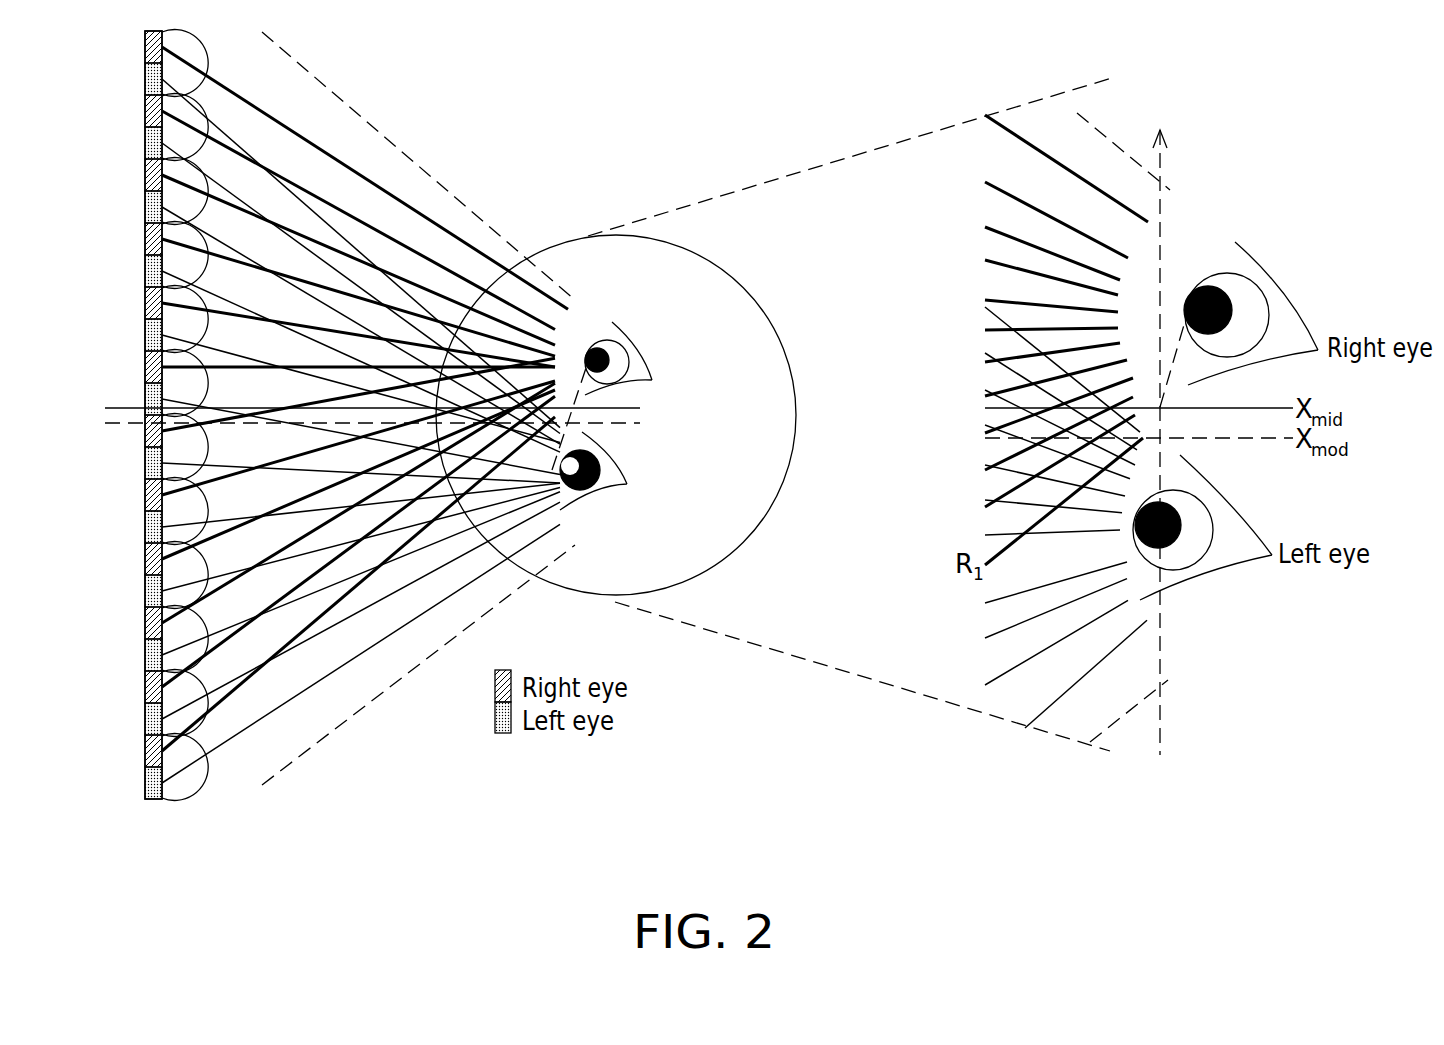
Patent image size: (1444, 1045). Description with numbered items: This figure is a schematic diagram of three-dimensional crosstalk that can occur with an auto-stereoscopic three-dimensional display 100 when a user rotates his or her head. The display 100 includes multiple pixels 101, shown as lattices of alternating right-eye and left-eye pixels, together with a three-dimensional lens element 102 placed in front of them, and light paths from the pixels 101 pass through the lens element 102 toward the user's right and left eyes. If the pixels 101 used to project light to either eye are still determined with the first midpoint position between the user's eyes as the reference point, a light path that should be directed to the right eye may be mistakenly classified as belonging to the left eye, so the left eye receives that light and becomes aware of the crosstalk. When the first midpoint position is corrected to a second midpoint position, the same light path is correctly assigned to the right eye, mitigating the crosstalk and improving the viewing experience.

The auto-stereoscopic 3D display 100 is at (165, 472).
The pixels 101 is at (153, 800).
The 3D lens element 102 is at (187, 448).